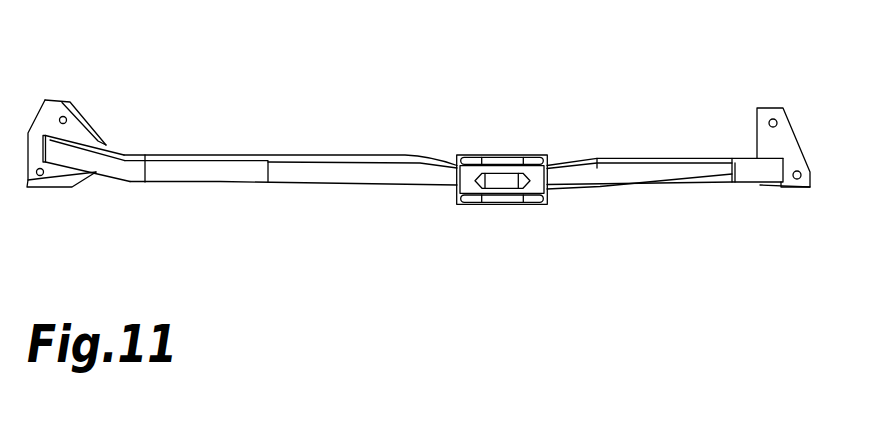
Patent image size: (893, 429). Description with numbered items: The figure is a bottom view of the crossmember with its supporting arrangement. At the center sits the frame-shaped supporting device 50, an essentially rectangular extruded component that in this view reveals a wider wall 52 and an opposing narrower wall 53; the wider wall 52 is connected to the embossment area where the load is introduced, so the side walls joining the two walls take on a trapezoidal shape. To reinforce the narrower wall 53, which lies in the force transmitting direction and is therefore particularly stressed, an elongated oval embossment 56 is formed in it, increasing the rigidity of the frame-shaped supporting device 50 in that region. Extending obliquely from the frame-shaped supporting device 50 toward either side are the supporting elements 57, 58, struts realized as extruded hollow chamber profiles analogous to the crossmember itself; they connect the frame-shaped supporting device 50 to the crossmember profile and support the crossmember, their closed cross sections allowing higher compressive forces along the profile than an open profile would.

The frame-shaped supporting device 50 is at (467, 205).
The wider wall 52 is at (484, 157).
The opposing wall 53 is at (518, 188).
The embossment 56 is at (503, 183).
The supporting element 57 is at (358, 175).
The supporting element 58 is at (687, 177).